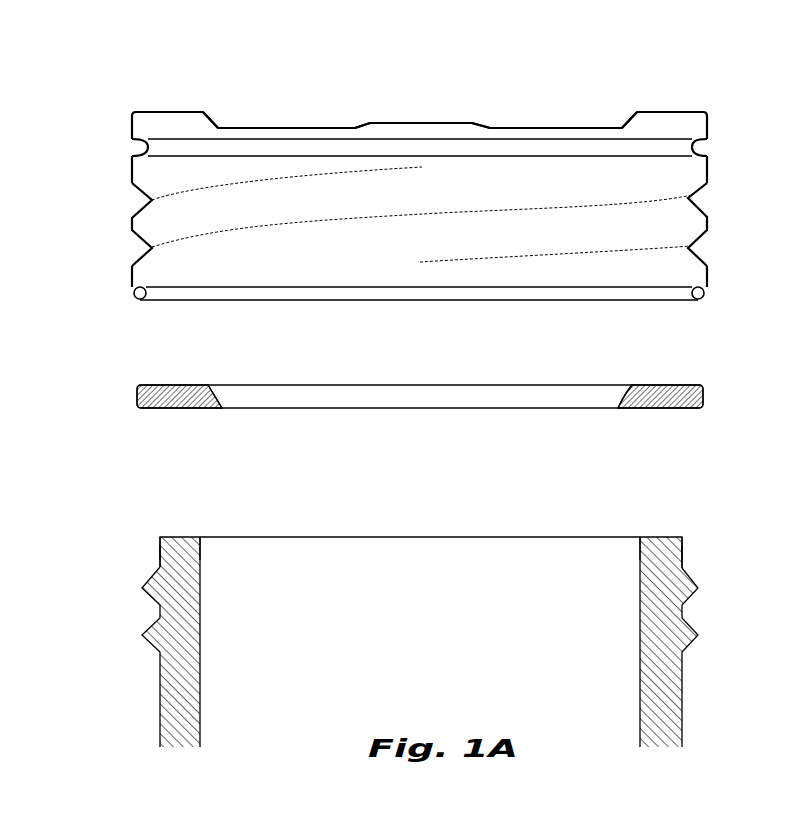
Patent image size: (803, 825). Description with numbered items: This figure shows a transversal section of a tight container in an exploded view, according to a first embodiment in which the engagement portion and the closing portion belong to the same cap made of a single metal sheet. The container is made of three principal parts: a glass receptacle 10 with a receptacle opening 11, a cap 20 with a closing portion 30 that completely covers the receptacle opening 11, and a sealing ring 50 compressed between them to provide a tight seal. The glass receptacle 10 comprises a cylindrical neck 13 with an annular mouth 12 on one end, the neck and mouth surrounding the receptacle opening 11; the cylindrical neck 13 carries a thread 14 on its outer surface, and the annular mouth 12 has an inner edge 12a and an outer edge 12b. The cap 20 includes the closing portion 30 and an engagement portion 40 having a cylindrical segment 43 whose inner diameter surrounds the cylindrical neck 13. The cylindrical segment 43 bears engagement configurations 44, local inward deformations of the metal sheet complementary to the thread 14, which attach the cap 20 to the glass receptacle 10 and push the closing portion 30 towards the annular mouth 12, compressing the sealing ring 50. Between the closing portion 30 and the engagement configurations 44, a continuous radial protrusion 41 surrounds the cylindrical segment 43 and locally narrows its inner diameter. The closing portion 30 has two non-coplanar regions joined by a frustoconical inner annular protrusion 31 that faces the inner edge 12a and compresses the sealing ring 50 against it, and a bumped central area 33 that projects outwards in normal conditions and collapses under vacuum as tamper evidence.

The glass receptacle 10 is at (146, 688).
The receptacle opening 11 is at (387, 537).
The annular mouth 12 is at (178, 535).
The inner edge 12a is at (200, 535).
The outer edge 12b is at (158, 535).
The cylindrical neck 13 is at (158, 553).
The thread 14 is at (140, 589).
The cap 20 is at (120, 74).
The closing portion 30 is at (287, 125).
The inner annular protrusion 31 is at (220, 122).
The bumped central area 33 is at (420, 124).
The engagement portion 40 is at (60, 107).
The continuous radial protrusion 41 is at (145, 143).
The cylindrical segment 43 is at (132, 170).
The engagement configurations 44 is at (150, 200).
The sealing ring 50 is at (181, 395).